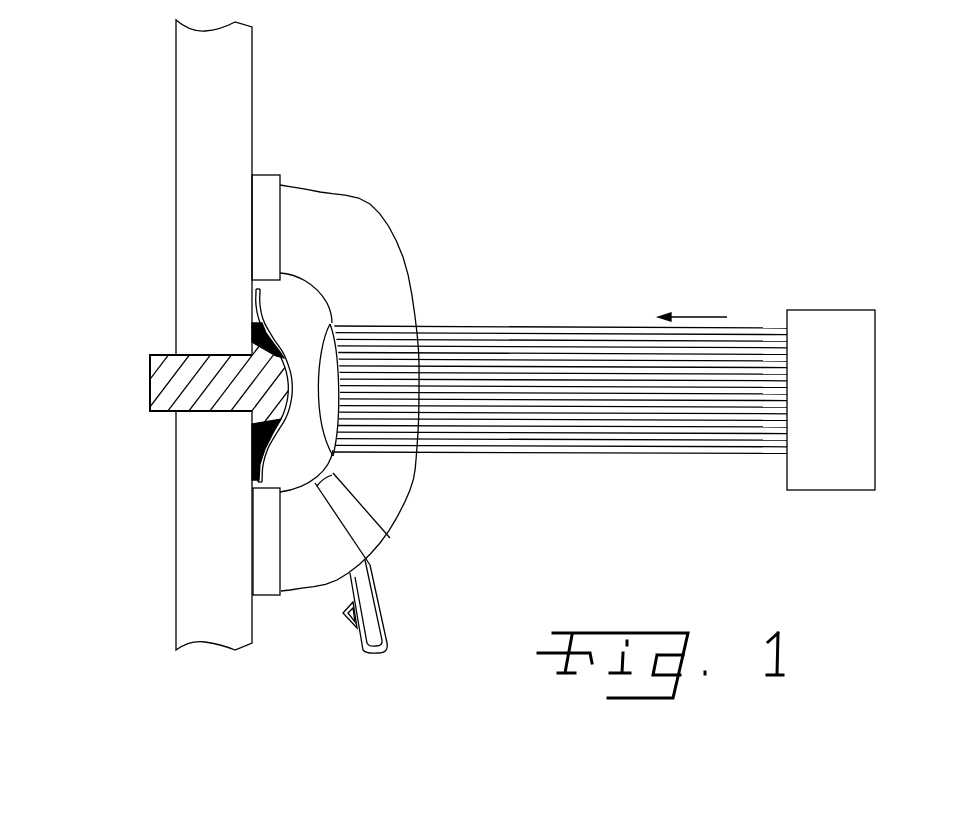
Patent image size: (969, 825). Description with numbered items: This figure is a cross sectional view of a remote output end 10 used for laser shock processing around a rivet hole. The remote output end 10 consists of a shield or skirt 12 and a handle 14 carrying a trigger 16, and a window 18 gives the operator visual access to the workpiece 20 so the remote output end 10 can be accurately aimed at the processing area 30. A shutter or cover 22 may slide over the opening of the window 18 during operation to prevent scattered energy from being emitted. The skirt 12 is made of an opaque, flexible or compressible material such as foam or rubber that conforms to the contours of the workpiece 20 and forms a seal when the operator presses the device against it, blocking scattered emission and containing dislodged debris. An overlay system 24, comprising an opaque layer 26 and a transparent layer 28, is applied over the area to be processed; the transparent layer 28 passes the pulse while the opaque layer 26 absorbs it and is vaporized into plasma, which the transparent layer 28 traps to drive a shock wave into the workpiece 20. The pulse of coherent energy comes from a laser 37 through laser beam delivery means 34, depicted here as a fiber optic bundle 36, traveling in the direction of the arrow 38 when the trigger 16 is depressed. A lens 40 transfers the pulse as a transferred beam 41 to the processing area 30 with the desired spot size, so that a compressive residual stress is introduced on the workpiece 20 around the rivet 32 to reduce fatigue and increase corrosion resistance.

The remote output end 10 is at (357, 660).
The shield or skirt 12 is at (267, 185).
The handle 14 is at (387, 617).
The trigger 16 is at (353, 623).
The window 18 is at (368, 528).
The workpiece 20 is at (238, 72).
The shutter or cover 22 is at (340, 476).
The overlay system 24 is at (280, 297).
The opaque layer 26 is at (250, 328).
The transparent layer 28 is at (255, 302).
The processing area 30 is at (289, 320).
The rivet 32 is at (150, 377).
The laser beam delivery means 34 is at (553, 456).
The fiber optic bundle 36 is at (653, 448).
The laser 37 is at (838, 325).
The arrow 38 is at (698, 312).
The lens 40 is at (333, 380).
The transferred beam 41 is at (293, 432).